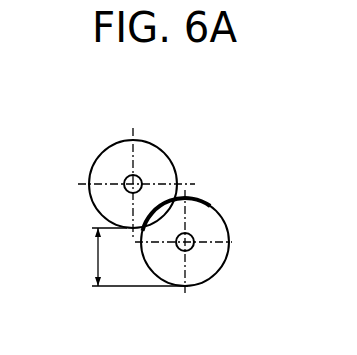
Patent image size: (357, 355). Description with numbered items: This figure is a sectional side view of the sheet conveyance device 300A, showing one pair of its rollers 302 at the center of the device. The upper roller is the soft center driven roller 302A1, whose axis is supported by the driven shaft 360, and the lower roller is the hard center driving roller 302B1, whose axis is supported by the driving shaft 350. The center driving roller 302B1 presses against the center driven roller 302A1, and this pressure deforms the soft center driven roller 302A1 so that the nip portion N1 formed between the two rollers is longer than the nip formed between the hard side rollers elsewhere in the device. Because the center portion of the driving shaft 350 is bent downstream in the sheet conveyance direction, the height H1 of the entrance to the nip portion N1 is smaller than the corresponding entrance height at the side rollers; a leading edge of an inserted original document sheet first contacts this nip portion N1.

The sheet conveyance device 300A is at (170, 87).
The roller 302 is at (198, 132).
The center driven roller 302A1 is at (105, 155).
The center driving roller 302B1 is at (236, 292).
The driven shaft 360 is at (126, 190).
The driving shaft 350 is at (193, 235).
The nip portion N1 is at (175, 198).
The height H1 is at (137, 257).